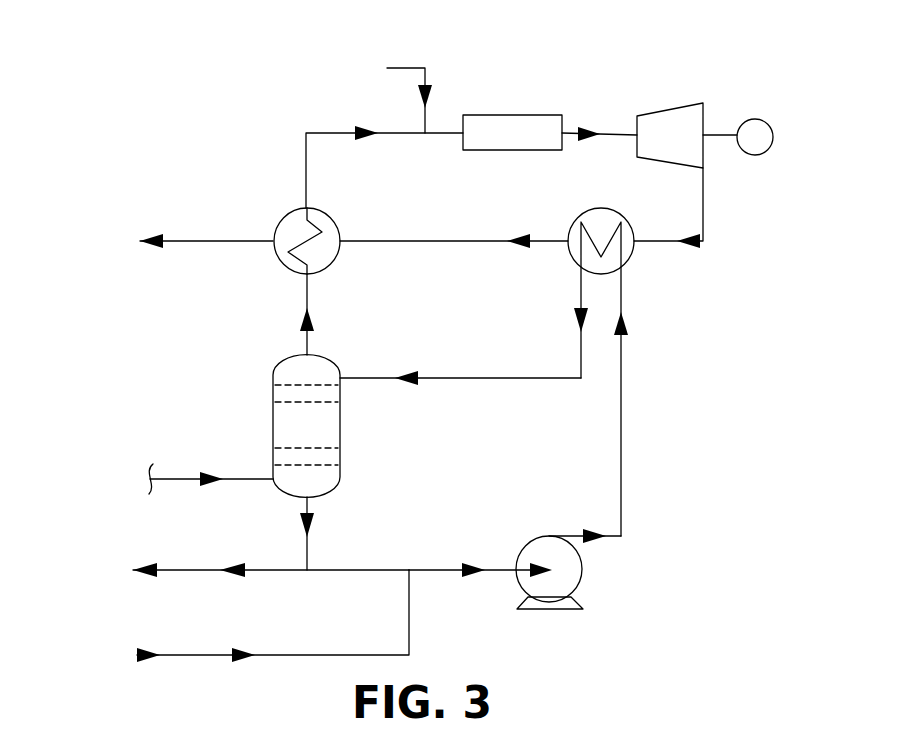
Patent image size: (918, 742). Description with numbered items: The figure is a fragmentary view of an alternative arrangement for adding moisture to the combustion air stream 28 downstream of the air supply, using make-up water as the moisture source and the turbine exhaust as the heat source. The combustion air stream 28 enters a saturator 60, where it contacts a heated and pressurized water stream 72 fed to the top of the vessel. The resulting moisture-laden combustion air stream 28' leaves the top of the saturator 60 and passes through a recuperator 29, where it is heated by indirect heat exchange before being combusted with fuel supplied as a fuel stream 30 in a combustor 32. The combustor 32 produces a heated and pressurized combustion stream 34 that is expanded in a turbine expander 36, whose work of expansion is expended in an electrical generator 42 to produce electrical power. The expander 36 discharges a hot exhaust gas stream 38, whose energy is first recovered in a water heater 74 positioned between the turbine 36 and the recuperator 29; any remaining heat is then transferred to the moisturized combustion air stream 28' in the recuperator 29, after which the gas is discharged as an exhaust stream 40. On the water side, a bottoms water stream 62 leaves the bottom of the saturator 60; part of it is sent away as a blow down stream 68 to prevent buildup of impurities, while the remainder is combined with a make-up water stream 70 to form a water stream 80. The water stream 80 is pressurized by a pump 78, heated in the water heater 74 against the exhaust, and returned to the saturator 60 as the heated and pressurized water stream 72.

The combustion air stream 28 is at (211, 494).
The moisture-laden combustion air stream 28' is at (340, 314).
The recuperator 29 is at (335, 228).
The fuel stream 30 is at (425, 80).
The combustor 32 is at (530, 150).
The heated and pressurized combustion stream 34 is at (605, 136).
The expander 36 is at (672, 122).
The hot exhaust gas stream 38 is at (703, 222).
The exhaust stream 40 is at (222, 241).
The electrical generator 42 is at (773, 135).
The saturator 60 is at (335, 422).
The bottoms water stream 62 is at (307, 551).
The blow down stream 68 is at (265, 572).
The make-up water stream 70 is at (350, 655).
The heated and pressurized water stream 72 is at (432, 378).
The water heater 74 is at (573, 254).
The pump 78 is at (572, 577).
The water stream 80 is at (455, 572).